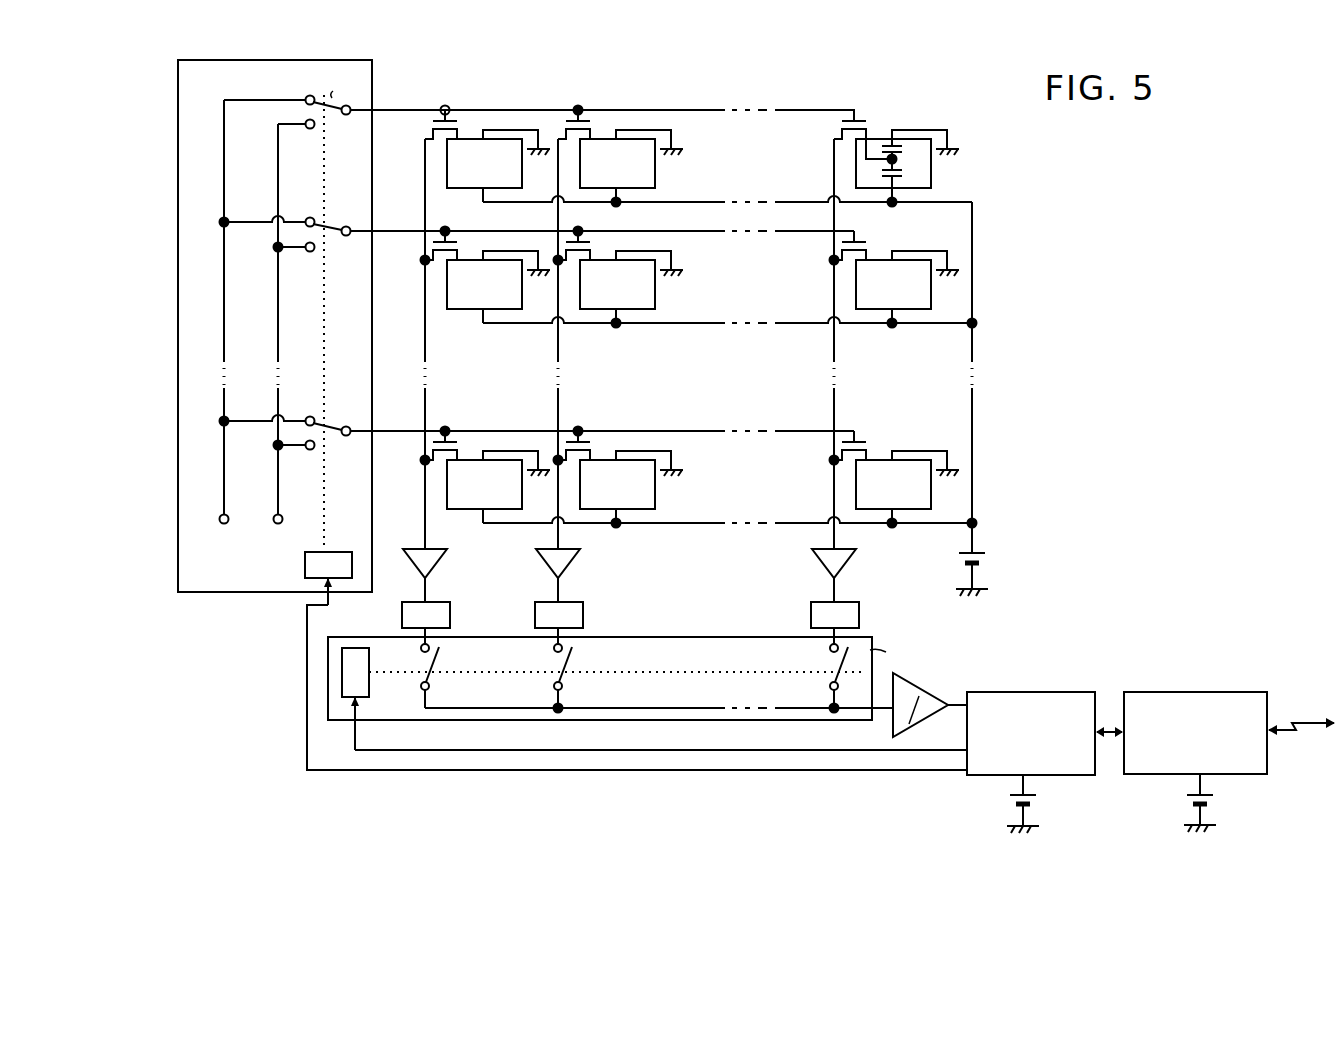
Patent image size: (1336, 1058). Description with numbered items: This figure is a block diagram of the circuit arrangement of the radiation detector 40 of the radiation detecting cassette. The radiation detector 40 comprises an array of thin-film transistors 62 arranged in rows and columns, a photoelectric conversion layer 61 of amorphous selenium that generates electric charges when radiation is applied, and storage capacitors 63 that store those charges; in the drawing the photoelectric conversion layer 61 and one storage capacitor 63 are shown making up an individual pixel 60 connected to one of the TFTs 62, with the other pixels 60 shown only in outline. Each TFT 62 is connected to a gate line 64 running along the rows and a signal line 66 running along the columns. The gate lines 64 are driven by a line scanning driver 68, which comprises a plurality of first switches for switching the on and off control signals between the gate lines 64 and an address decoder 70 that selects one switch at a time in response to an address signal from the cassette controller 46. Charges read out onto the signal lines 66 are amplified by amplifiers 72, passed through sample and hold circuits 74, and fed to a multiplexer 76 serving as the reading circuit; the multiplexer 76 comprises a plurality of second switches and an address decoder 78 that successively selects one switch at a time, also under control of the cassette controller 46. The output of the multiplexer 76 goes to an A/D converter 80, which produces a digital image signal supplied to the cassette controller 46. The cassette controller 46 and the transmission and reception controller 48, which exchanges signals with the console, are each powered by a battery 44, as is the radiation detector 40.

The radiation detector 40 is at (850, 78).
The battery 44 is at (982, 550).
The cassette controller 46 is at (1075, 692).
The transmission and reception controller 48 is at (1240, 690).
The pixel 60 is at (874, 137).
The photoelectric conversion layer 61 is at (906, 172).
The thin-film transistor 62 is at (840, 122).
The storage capacitor 63 is at (905, 147).
The gate line 64 is at (814, 110).
The signal line 66 is at (833, 163).
The line scanning driver 68 is at (178, 97).
The address decoder 70 is at (305, 562).
The amplifier 72 is at (574, 560).
The sample and hold circuit 74 is at (574, 617).
The multiplexer 76 is at (722, 637).
The address decoder 78 is at (370, 679).
The A/D converter 80 is at (928, 690).